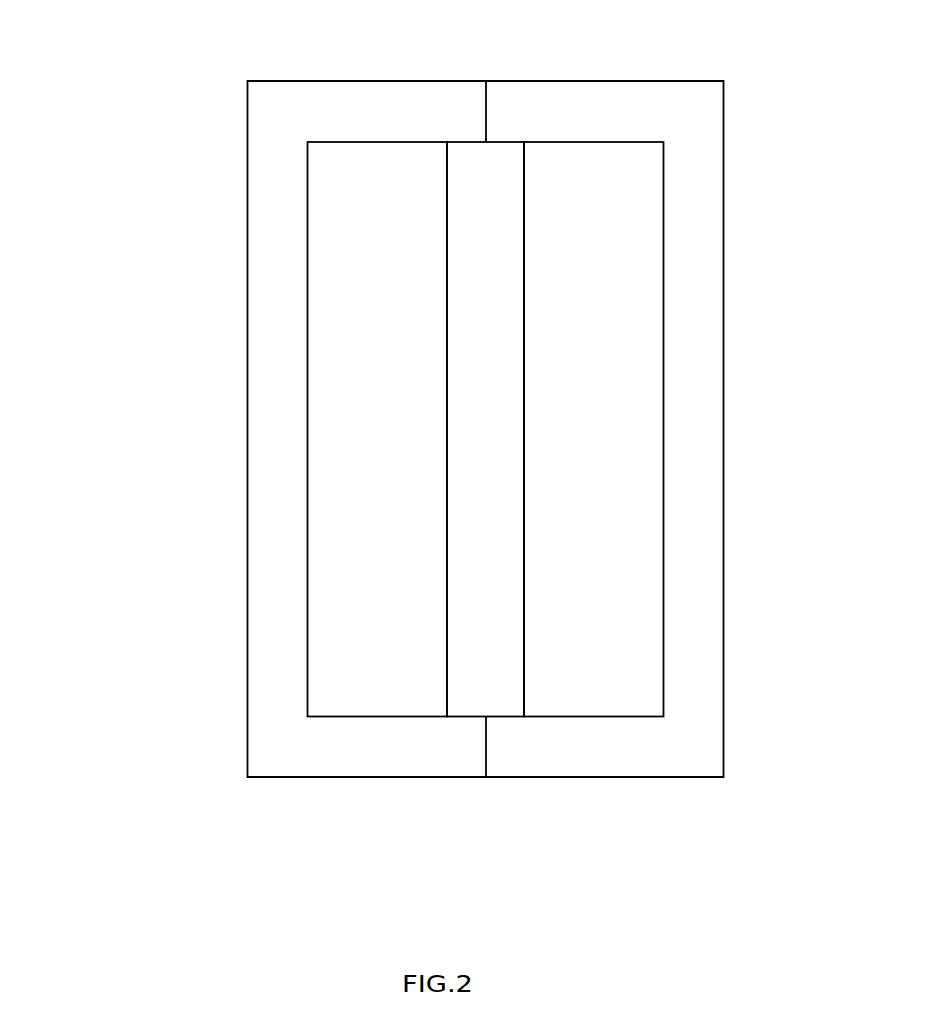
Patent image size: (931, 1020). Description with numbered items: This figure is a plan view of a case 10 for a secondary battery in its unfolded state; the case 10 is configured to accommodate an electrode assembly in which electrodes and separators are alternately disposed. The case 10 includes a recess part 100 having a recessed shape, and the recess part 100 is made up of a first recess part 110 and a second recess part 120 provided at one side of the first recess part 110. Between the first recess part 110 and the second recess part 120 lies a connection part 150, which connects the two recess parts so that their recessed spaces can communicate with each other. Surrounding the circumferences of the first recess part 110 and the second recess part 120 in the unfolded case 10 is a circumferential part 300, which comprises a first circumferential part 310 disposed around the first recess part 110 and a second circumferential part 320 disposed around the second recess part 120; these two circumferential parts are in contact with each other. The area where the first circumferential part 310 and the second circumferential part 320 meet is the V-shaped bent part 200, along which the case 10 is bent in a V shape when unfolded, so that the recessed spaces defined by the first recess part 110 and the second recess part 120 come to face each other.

The case 10 is at (208, 261).
The recess part 100 is at (135, 770).
The first recess part 110 is at (375, 700).
The second recess part 120 is at (592, 700).
The connection part 150 is at (467, 700).
The V-shaped bent part 200 is at (486, 108).
The circumferential part 300 is at (135, 675).
The first circumferential part 310 is at (267, 437).
The second circumferential part 320 is at (702, 439).